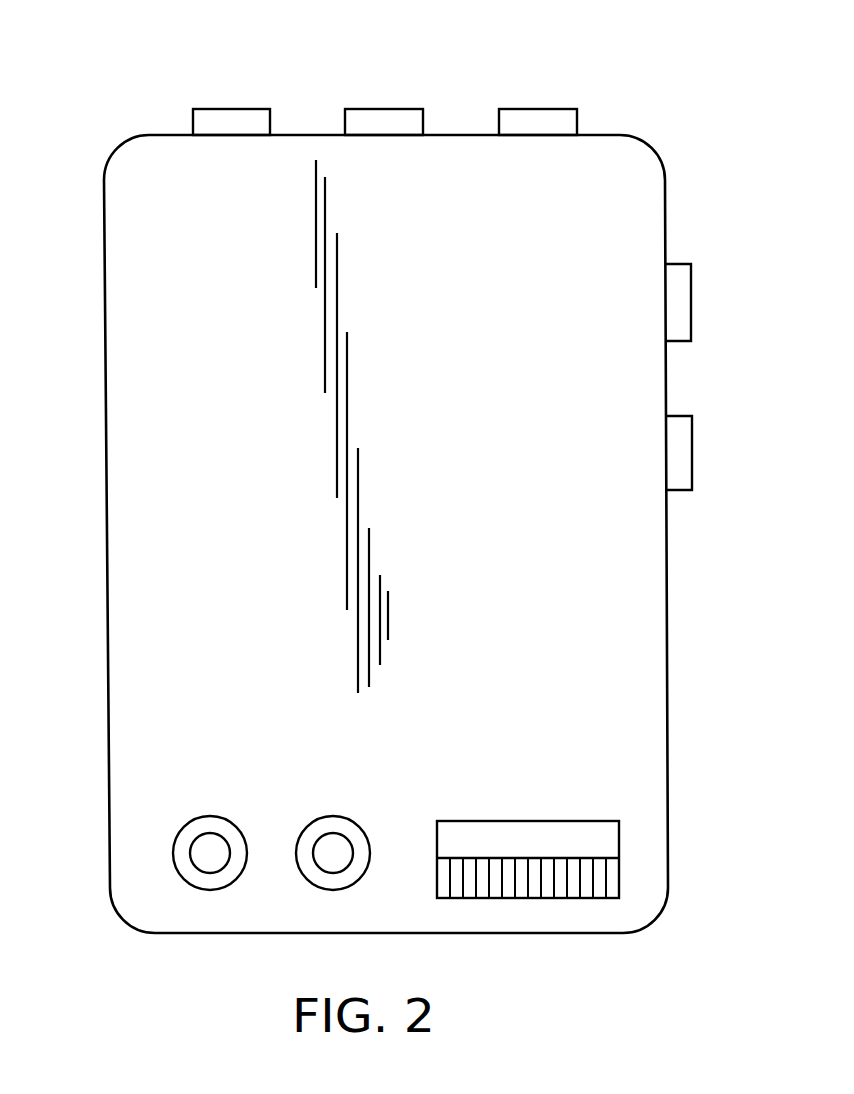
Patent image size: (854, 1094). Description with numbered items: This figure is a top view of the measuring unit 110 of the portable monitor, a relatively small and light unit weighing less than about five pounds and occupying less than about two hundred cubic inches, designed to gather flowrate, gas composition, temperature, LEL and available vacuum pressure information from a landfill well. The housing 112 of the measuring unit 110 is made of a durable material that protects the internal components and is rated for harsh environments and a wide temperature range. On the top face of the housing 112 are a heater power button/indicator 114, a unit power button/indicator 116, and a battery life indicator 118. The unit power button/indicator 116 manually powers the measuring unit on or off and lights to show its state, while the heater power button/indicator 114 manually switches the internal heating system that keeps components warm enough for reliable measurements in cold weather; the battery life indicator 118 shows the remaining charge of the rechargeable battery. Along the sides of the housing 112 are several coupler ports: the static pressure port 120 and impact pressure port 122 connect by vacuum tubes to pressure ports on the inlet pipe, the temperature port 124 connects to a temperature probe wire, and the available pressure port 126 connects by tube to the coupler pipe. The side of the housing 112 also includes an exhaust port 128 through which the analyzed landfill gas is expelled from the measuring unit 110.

The measuring unit 110 is at (140, 126).
The housing 112 is at (130, 527).
The heater power button/indicator 114 is at (198, 890).
The unit power button/indicator 116 is at (321, 890).
The battery life indicator 118 is at (618, 842).
The static pressure port 120 is at (242, 118).
The impact pressure port 122 is at (385, 118).
The temperature port 124 is at (538, 115).
The available pressure port 126 is at (686, 295).
The exhaust port 128 is at (683, 443).